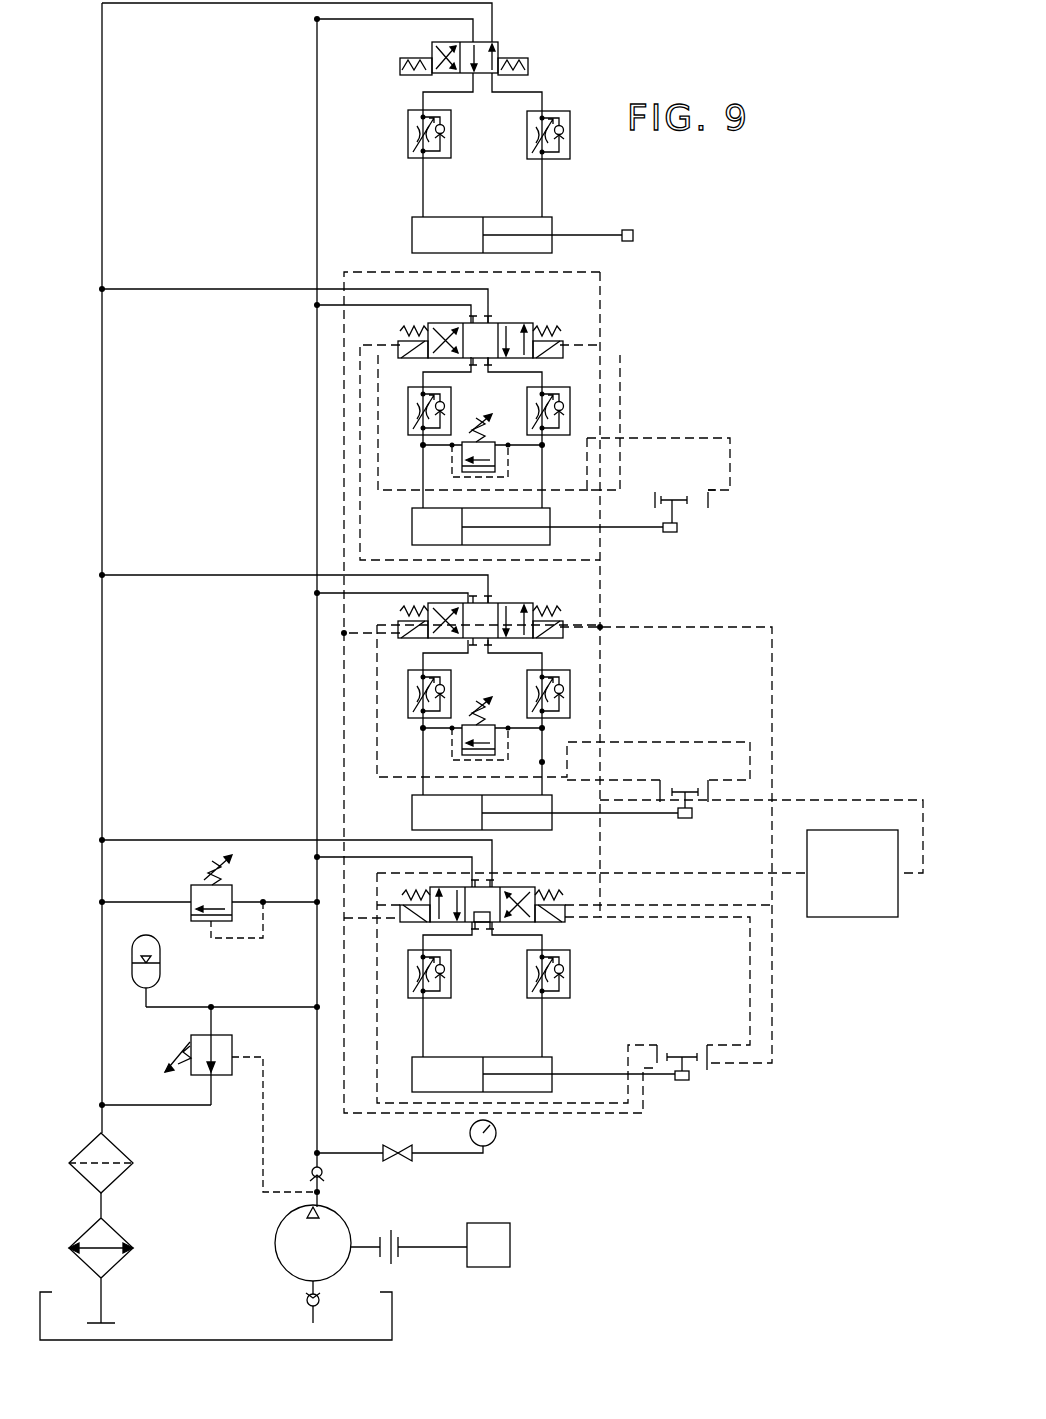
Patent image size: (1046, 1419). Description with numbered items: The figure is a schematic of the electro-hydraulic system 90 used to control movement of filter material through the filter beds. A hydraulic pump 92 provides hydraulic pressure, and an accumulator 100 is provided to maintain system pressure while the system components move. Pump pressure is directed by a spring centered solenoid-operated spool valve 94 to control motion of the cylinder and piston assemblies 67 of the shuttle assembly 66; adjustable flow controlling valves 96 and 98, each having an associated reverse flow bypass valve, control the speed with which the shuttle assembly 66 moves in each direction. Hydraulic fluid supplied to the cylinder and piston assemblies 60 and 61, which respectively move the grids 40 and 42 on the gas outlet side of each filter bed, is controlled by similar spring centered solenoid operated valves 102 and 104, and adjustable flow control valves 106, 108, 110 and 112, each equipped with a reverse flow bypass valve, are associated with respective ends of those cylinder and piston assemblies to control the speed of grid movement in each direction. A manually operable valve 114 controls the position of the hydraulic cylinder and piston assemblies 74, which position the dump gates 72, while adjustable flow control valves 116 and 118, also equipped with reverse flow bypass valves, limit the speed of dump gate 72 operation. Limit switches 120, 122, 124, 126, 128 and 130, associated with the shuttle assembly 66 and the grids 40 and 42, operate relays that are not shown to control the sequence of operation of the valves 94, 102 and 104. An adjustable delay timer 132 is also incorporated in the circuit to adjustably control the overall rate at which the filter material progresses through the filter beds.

The manually operable valve 114 is at (498, 46).
The adjustable flow control valve 116 is at (408, 129).
The adjustable flow control valve 118 is at (527, 128).
The hydraulic cylinder and piston assemblies 74 is at (466, 217).
The dump gates 72 is at (628, 230).
The spring centered solenoid operated valve 104 is at (508, 323).
The adjustable flow control valve 110 is at (408, 402).
The adjustable flow control valve 112 is at (527, 398).
The cylinder and piston assembly 61 is at (540, 545).
The limit switch 128 is at (655, 492).
The limit switch 130 is at (708, 492).
The grid 42 is at (670, 532).
The spring centered solenoid operated valve 102 is at (508, 603).
The adjustable flow control valve 106 is at (408, 690).
The adjustable flow control valve 108 is at (527, 688).
The cylinder and piston assembly 60 is at (518, 831).
The limit switch 124 is at (660, 780).
The limit switch 126 is at (708, 780).
The grid 40 is at (685, 818).
The spring centered solenoid-operated spool valve 94 is at (512, 887).
The adjustable flow controlling valve 96 is at (448, 957).
The adjustable flow controlling valve 98 is at (527, 985).
The cylinder and piston assemblies 67 is at (472, 1057).
The limit switch 122 is at (657, 1045).
The limit switch 120 is at (707, 1045).
The shuttle assembly 66 is at (682, 1080).
The adjustable delay timer 132 is at (862, 917).
The accumulator 100 is at (160, 961).
The hydraulic pump 92 is at (345, 1222).
The electro-hydraulic system 90 is at (614, 1146).